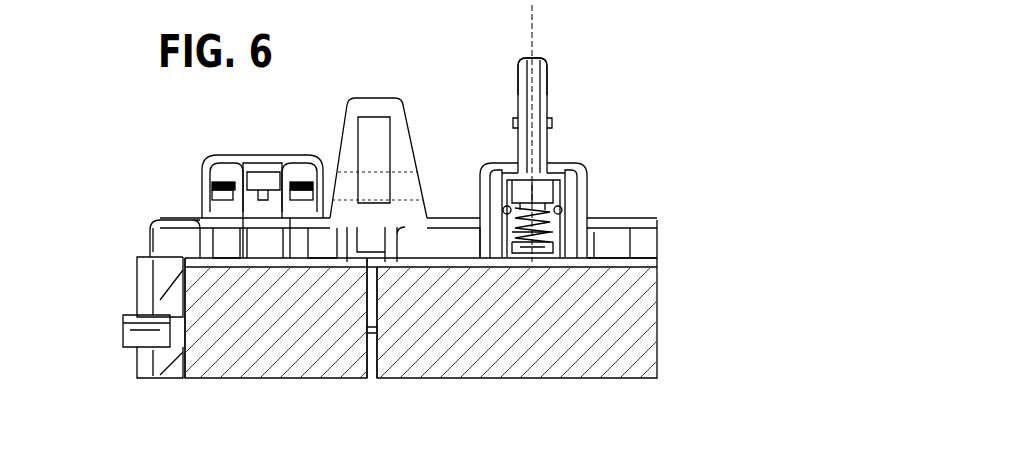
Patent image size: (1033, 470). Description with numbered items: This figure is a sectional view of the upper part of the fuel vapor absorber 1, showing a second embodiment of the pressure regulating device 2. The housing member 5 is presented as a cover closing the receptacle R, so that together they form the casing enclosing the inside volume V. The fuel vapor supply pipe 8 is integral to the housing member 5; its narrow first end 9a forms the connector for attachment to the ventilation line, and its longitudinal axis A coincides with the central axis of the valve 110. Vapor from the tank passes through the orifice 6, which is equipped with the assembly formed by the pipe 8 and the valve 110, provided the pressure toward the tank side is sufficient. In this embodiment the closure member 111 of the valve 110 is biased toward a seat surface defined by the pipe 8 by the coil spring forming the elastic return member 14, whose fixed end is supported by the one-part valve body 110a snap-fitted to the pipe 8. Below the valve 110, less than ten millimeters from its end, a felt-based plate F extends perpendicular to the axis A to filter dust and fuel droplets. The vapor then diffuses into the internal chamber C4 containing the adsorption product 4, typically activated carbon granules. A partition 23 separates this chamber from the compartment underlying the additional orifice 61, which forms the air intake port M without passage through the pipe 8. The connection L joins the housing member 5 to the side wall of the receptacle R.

The fuel vapor absorber 1 is at (92, 283).
The air intake port M is at (202, 176).
The additional orifice 61 is at (270, 180).
The longitudinal axis A is at (530, 33).
The first end 9a is at (546, 63).
The pipe 8 is at (548, 137).
The orifice 6 is at (508, 158).
The valve 110 is at (578, 195).
The pressure regulating device 2 is at (630, 185).
The closure member 111 is at (557, 223).
The housing member 5 is at (483, 250).
The felt-based plate F is at (613, 262).
The connection L is at (157, 328).
The receptacle R is at (170, 365).
The inside volume V is at (187, 350).
The internal chamber C4 is at (413, 353).
The partition 23 is at (377, 330).
The elastic return member 14 is at (522, 240).
The valve body 110a is at (545, 243).
The adsorption product 4 is at (623, 355).